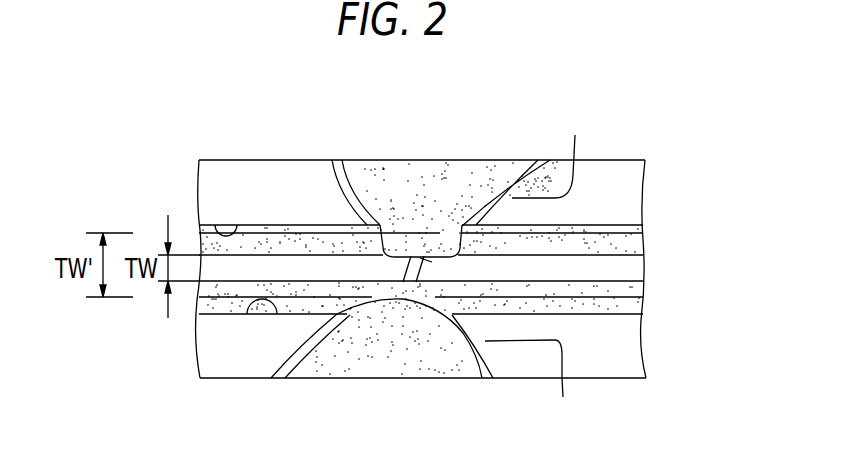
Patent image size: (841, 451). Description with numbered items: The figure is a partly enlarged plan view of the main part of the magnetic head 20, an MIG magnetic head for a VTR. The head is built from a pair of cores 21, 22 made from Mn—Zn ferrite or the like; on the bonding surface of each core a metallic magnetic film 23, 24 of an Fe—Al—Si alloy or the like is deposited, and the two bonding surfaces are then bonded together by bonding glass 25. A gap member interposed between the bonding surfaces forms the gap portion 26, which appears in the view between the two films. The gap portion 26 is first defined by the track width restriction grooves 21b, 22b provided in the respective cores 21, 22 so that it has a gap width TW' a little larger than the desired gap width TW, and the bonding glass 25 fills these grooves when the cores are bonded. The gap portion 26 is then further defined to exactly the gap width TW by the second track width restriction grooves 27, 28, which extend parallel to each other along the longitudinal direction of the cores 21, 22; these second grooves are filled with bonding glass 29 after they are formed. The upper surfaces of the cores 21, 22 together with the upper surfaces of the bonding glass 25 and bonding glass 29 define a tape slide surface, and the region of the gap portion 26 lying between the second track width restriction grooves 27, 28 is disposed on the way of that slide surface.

The magnetic head 20 is at (680, 169).
The core 21 is at (218, 350).
The track width restriction groove 21b is at (365, 177).
The core 22 is at (600, 347).
The track width restriction groove 22b is at (533, 177).
The metallic magnetic film 23 is at (345, 190).
The metallic magnetic film 24 is at (462, 225).
The bonding glass 25 is at (423, 190).
The gap portion 26 is at (440, 266).
The second track width restriction groove 27 is at (236, 225).
The second track width restriction groove 28 is at (276, 314).
The bonding glass 29 is at (620, 240).